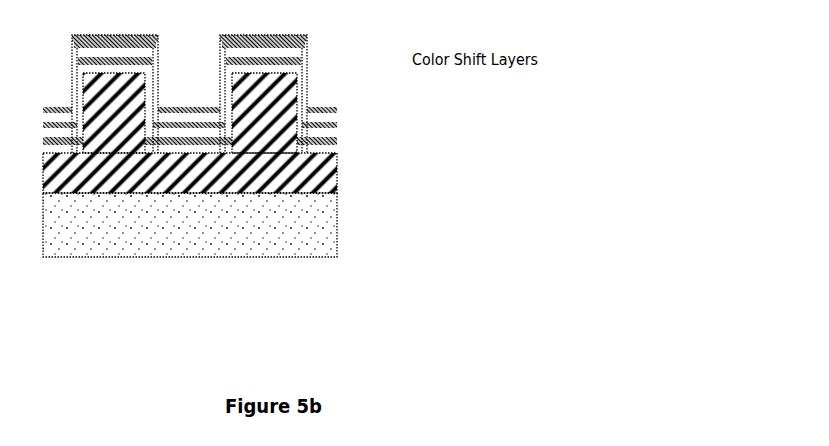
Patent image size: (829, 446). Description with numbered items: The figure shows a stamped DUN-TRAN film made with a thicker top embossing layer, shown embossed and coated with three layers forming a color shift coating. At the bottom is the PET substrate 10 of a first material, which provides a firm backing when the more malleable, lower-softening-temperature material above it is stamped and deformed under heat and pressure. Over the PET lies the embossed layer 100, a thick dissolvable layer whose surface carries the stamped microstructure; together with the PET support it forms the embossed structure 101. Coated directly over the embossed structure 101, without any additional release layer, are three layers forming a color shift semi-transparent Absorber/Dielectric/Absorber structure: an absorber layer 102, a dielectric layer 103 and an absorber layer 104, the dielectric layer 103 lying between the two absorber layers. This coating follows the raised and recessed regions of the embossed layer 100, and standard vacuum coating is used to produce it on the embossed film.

The substrate 10 is at (341, 240).
The embossed layer 100 is at (341, 172).
The embossed structure 101 is at (343, 157).
The absorber layer 102 is at (341, 138).
The dielectric layer 103 is at (492, 73).
The absorber layer 104 is at (341, 108).